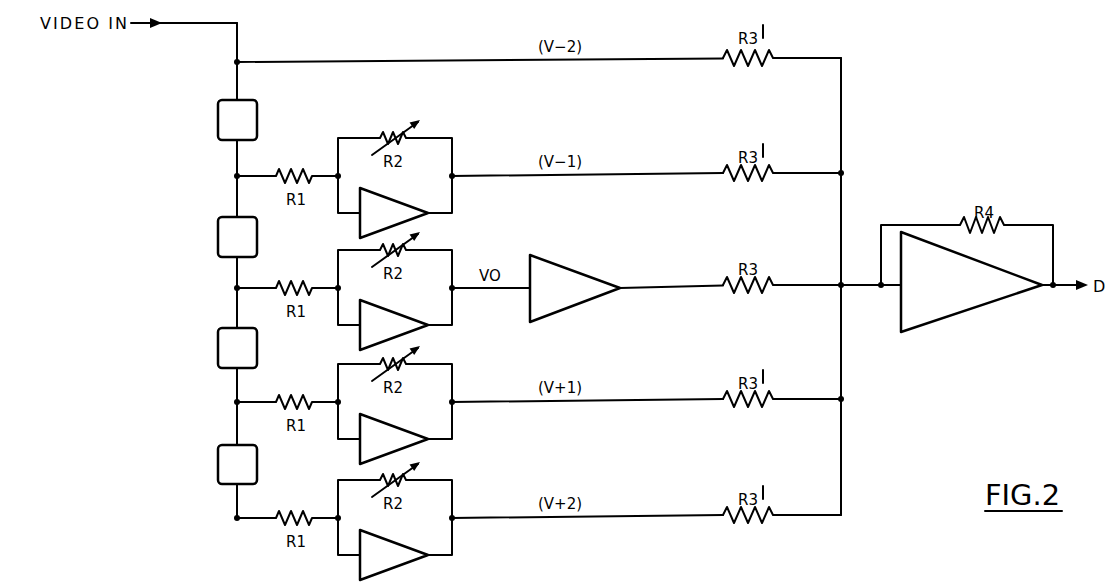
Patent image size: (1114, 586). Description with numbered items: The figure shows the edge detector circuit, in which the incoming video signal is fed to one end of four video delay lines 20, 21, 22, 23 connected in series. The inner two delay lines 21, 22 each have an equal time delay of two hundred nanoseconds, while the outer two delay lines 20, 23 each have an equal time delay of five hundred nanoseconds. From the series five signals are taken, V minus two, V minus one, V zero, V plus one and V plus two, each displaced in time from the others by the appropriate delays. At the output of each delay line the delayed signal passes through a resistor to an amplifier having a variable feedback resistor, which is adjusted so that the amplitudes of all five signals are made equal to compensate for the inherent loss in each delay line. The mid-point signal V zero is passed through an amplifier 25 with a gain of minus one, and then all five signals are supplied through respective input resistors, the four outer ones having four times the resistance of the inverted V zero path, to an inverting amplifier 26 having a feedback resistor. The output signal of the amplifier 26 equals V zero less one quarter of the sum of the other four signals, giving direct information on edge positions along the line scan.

The video delay line 20 is at (218, 118).
The video delay line 21 is at (218, 237).
The video delay line 22 is at (218, 348).
The video delay line 23 is at (218, 463).
The amplifier with a gain of minus one 25 is at (569, 271).
The inverting amplifier 26 is at (971, 310).